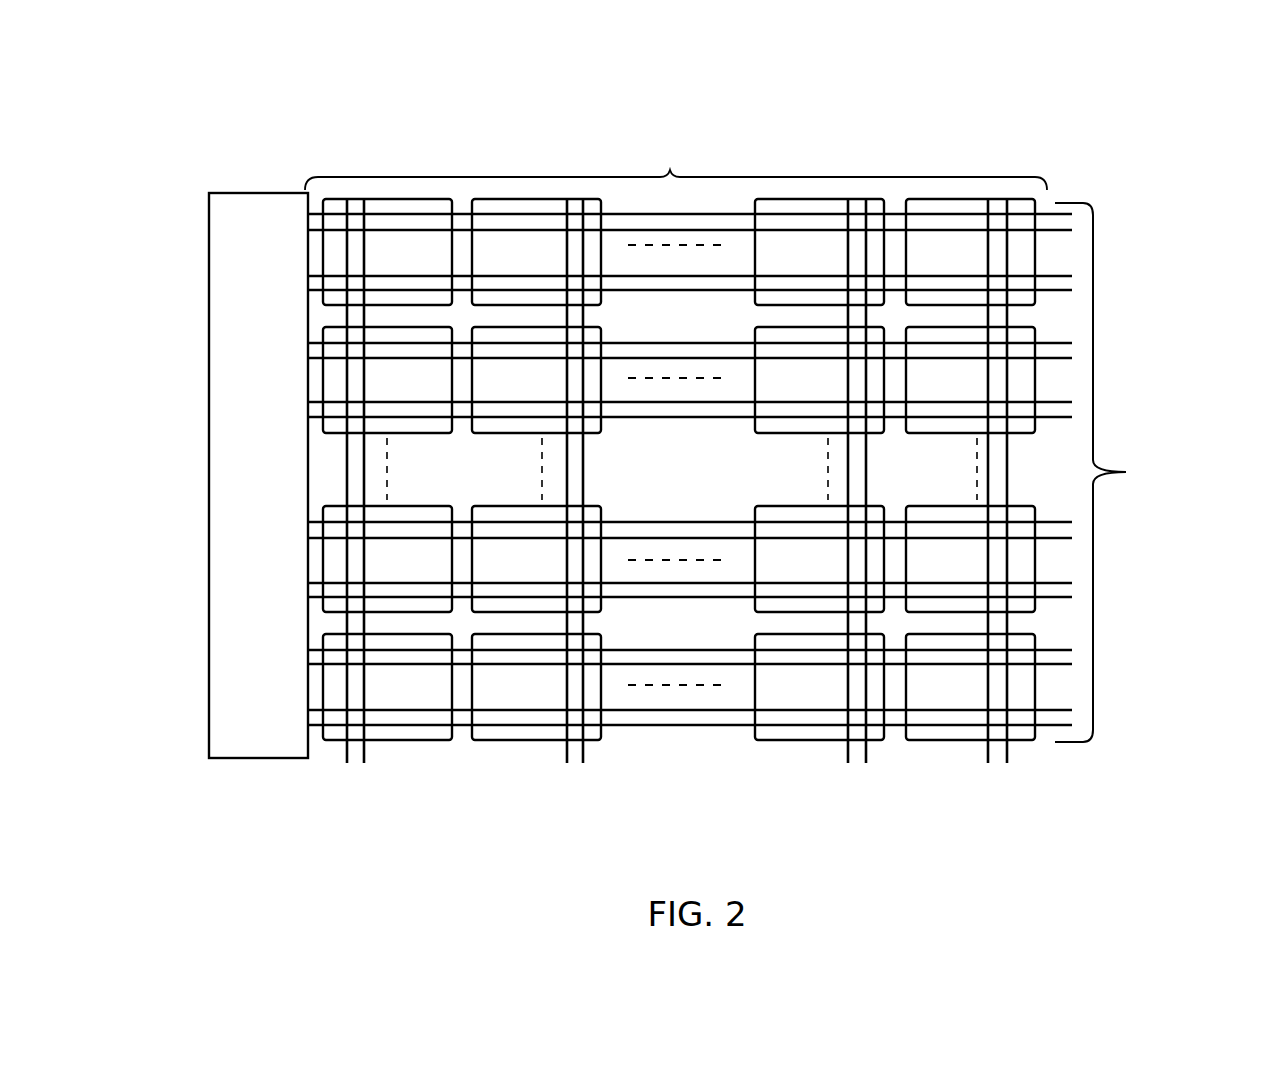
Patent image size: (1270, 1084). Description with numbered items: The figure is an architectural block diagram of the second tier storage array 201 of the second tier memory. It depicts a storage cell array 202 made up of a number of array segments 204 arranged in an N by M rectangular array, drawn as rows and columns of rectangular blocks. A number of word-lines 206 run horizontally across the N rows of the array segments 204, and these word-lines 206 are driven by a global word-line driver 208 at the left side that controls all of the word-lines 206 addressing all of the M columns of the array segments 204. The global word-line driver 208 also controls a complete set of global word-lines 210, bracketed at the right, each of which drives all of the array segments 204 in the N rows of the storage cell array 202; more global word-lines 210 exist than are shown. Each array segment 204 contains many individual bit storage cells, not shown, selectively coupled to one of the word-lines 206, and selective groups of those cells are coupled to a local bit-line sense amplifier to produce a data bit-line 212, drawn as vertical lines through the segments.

The second tier storage array 201 is at (243, 117).
The storage cell array 202 is at (670, 171).
The array segments 204 is at (403, 740).
The word-lines 206 is at (642, 723).
The global word-line driver 208 is at (280, 623).
The global word-lines 210 is at (1097, 575).
The data bit-line 212 is at (1007, 748).